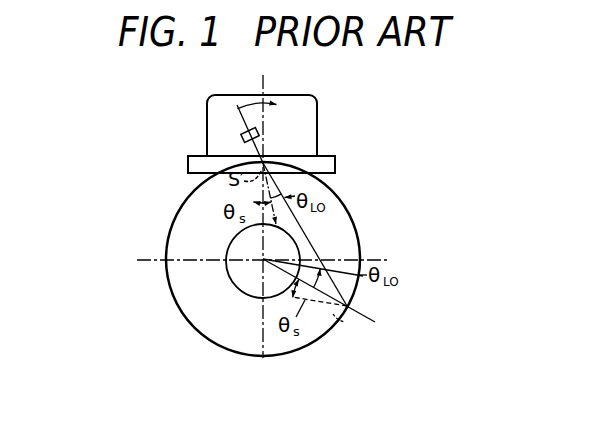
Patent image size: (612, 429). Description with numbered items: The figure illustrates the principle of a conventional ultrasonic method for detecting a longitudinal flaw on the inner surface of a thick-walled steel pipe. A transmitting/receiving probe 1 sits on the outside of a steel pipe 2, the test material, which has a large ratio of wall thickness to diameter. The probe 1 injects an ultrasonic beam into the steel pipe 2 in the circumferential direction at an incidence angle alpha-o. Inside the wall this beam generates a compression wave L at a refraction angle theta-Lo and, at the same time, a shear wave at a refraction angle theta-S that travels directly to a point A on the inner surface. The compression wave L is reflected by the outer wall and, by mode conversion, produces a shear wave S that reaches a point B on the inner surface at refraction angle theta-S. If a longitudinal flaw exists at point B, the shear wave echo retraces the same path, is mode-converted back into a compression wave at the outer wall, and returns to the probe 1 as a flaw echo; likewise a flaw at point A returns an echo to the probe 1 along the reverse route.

The transmitting/receiving probe 1 is at (317, 123).
The steel pipe 2 is at (355, 230).
The point A is at (272, 212).
The point B is at (284, 292).
The compression wave L is at (307, 233).
The shear wave S is at (319, 300).